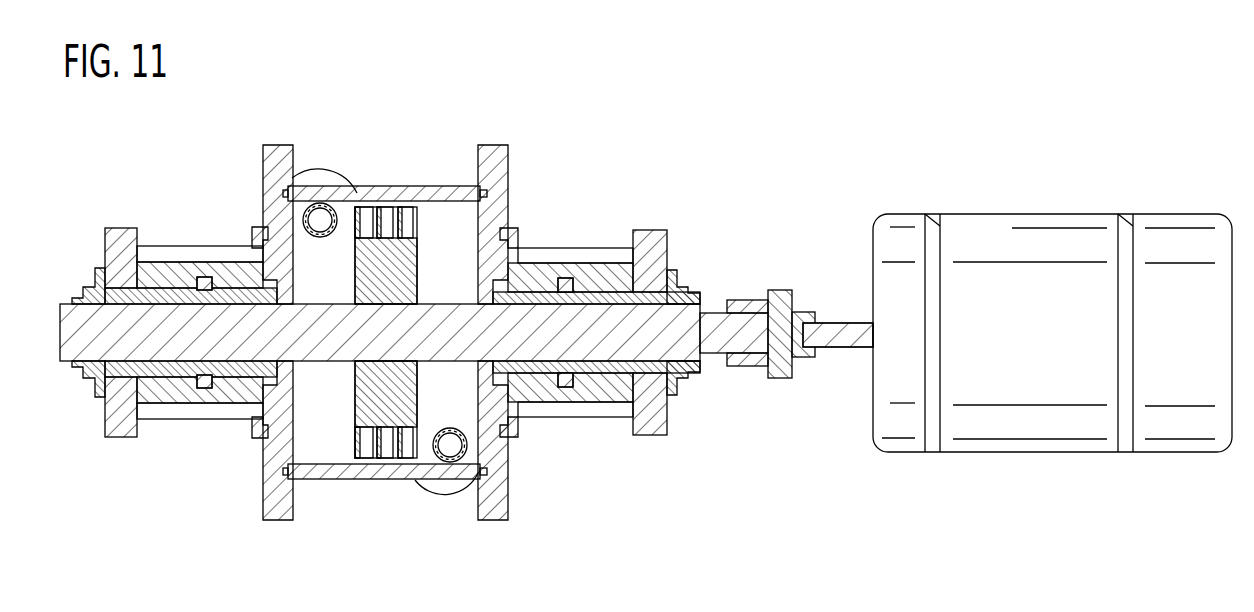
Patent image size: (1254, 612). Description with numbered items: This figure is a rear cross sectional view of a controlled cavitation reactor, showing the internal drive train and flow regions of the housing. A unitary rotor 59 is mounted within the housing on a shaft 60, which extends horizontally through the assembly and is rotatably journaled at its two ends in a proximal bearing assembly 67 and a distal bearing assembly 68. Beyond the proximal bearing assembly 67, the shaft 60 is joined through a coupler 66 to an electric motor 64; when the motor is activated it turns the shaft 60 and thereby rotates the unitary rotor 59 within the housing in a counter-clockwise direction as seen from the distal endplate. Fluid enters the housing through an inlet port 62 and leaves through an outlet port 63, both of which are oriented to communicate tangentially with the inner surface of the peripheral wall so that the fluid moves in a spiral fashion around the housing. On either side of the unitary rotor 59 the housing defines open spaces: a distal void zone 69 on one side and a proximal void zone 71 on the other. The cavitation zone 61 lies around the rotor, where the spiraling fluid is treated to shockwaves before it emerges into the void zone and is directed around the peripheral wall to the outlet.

The unitary rotor 59 is at (407, 260).
The shaft 60 is at (527, 347).
The cavitation zone 61 is at (373, 458).
The inlet port 62 is at (423, 456).
The outlet port 63 is at (358, 188).
The electric motor 64 is at (1066, 347).
The coupler 66 is at (772, 280).
The proximal bearing assembly 67 is at (643, 447).
The distal bearing assembly 68 is at (108, 223).
The distal void zone 69 is at (340, 413).
The proximal void zone 71 is at (462, 413).